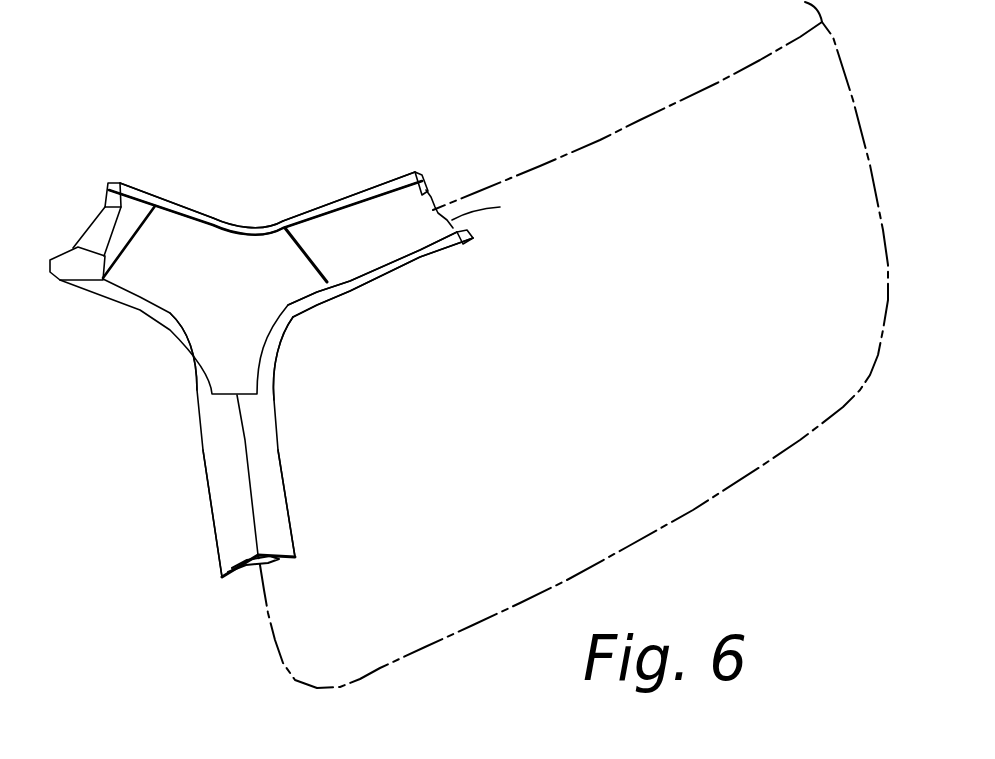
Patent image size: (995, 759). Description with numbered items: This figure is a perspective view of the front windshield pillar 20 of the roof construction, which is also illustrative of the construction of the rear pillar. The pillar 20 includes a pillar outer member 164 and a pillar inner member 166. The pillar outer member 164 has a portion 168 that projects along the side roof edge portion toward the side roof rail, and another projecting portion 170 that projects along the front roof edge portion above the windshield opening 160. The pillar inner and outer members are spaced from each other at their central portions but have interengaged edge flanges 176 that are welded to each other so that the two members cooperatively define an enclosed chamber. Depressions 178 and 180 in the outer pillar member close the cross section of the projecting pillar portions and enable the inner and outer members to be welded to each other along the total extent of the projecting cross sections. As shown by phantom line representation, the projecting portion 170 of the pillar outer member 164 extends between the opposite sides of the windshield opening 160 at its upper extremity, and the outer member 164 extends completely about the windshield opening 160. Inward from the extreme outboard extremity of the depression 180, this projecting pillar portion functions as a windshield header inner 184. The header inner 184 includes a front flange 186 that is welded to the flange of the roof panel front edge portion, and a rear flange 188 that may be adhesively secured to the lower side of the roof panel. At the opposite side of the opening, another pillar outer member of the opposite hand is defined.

The front windshield pillar 20 is at (282, 448).
The windshield opening 160 is at (453, 278).
The pillar outer member 164 is at (227, 403).
The pillar inner member 166 is at (272, 567).
The portion of pillar outer member 168 is at (166, 216).
The projecting portion of pillar outer member 170 is at (283, 250).
The interengaged edge flanges 176 is at (212, 217).
The depression 178 is at (127, 236).
The depression 180 is at (317, 250).
The windshield header inner 184 is at (500, 207).
The front flange 186 is at (397, 263).
The rear flange 188 is at (395, 182).